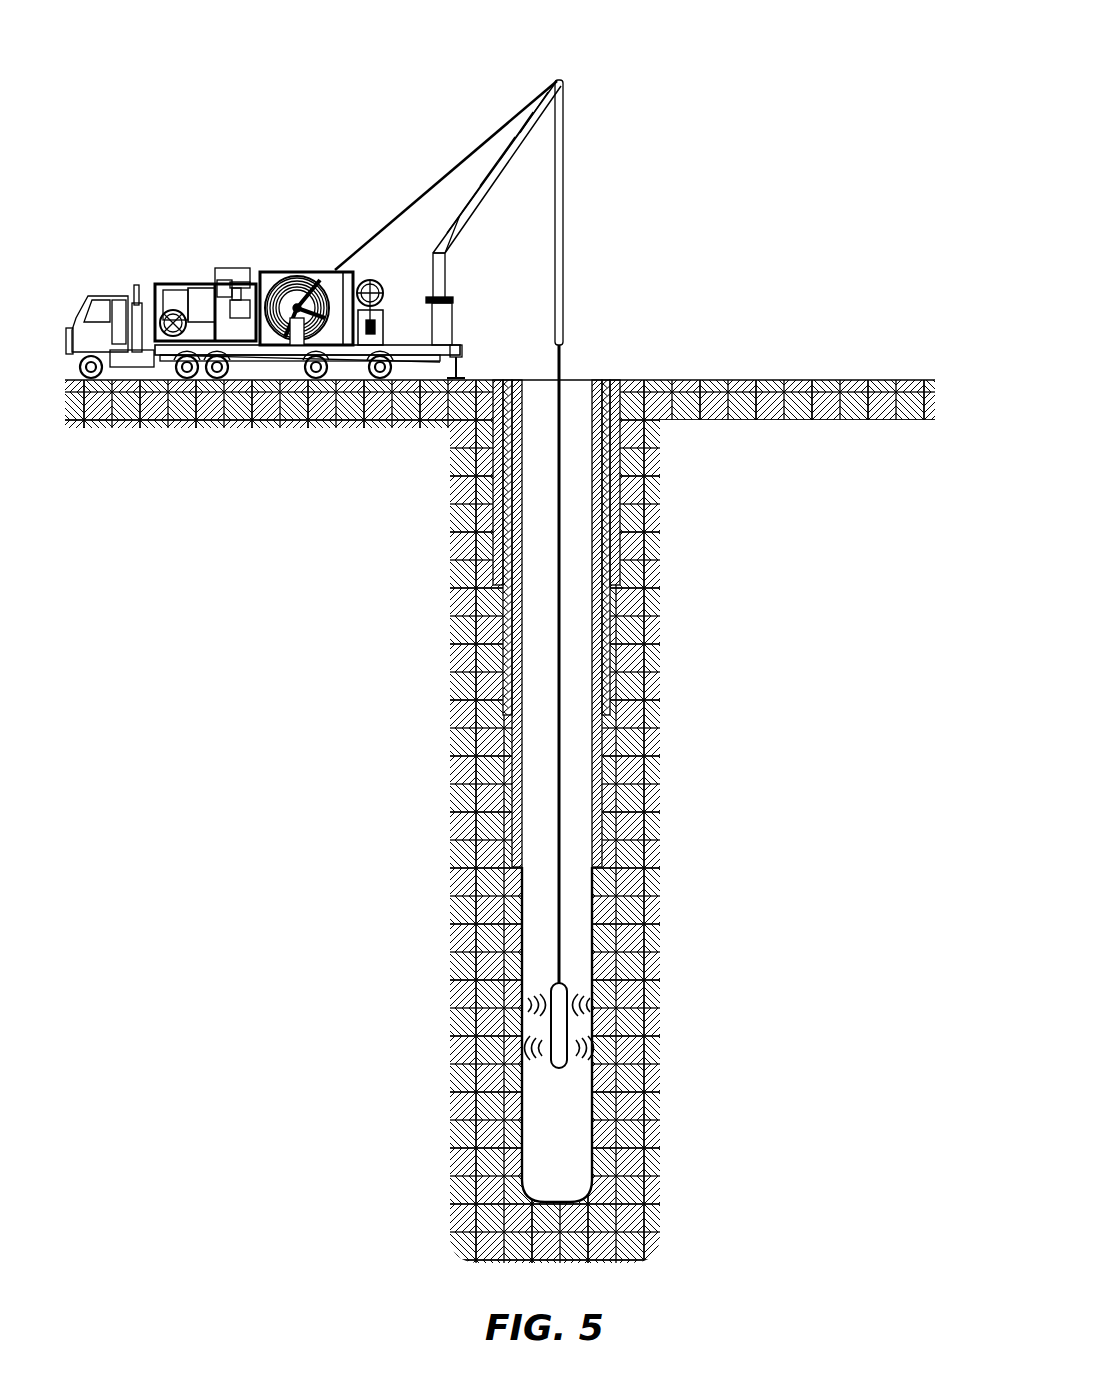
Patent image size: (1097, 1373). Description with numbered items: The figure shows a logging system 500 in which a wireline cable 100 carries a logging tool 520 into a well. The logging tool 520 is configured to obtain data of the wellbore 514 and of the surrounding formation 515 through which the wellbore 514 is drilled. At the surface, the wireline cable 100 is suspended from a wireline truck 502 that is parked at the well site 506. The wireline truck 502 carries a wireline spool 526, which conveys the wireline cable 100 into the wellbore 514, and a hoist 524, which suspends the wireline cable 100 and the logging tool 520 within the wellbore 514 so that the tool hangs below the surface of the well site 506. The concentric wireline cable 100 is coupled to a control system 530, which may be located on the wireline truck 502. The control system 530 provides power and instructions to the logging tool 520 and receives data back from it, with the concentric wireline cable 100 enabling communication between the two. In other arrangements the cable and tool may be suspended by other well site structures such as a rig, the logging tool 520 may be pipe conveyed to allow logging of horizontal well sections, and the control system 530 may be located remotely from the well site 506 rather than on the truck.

The logging system 500 is at (813, 50).
The wireline truck 502 is at (187, 284).
The control system 530 is at (214, 266).
The wireline spool 526 is at (298, 284).
The hoist 524 is at (563, 214).
The well site 506 is at (655, 380).
The wellbore 514 is at (580, 505).
The formation 515 is at (642, 802).
The wireline cable 100 is at (562, 890).
The logging tool 520 is at (560, 1025).